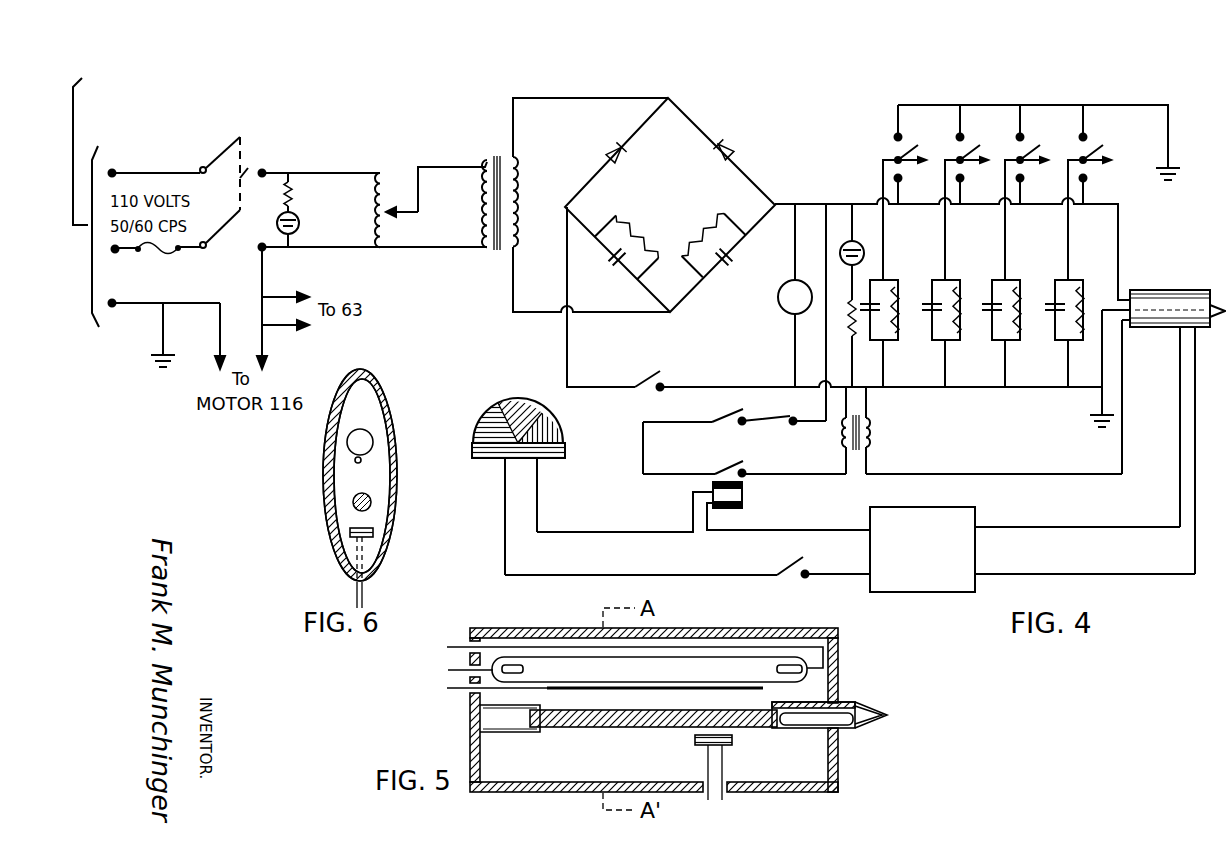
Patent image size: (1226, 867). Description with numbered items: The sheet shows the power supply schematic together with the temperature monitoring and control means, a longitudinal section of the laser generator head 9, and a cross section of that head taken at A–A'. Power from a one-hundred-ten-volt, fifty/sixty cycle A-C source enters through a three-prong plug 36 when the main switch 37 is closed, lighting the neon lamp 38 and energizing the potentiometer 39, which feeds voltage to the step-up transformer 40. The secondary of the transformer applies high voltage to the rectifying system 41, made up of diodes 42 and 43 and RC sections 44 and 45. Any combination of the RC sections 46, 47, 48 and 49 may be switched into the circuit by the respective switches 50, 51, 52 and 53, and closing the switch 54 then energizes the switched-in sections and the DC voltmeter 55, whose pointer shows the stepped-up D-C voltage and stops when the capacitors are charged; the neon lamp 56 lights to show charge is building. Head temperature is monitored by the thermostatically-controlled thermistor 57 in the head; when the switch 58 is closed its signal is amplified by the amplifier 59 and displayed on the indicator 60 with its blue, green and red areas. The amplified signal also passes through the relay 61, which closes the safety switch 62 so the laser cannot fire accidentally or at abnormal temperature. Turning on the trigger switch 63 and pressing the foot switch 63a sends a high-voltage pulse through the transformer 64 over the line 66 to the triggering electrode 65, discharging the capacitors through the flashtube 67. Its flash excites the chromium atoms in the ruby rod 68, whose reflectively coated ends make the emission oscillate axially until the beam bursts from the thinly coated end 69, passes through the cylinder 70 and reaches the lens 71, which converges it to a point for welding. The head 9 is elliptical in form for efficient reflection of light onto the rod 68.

In FIG. 4, the 3-prong plug 36 is at (78, 85).
In FIG. 4, the main switch 37 is at (250, 141).
In FIG. 4, the neon lamp 38 is at (300, 223).
In FIG. 4, the potentiometer 39 is at (393, 222).
In FIG. 4, the step-up transformer 40 is at (490, 153).
In FIG. 4, the rectifying system 41 is at (583, 87).
In FIG. 4, the diode 42 is at (623, 153).
In FIG. 4, the diode 43 is at (742, 151).
In FIG. 4, the RC section 44 is at (623, 270).
In FIG. 4, the RC section 45 is at (718, 270).
In FIG. 4, the RC section 46 is at (895, 280).
In FIG. 4, the RC section 47 is at (957, 280).
In FIG. 4, the RC section 48 is at (1017, 280).
In FIG. 4, the RC section 49 is at (1080, 280).
In FIG. 4, the switch 50 is at (914, 148).
In FIG. 4, the switch 51 is at (976, 148).
In FIG. 4, the switch 52 is at (1036, 148).
In FIG. 4, the switch 53 is at (1100, 148).
In FIG. 4, the switch 54 is at (637, 379).
In FIG. 4, the DC voltmeter 55 is at (785, 312).
In FIG. 4, the neon lamp 56 is at (861, 240).
In FIG. 6, the thermistor 57 is at (375, 534).
In FIG. 5, the thermistor 57 is at (735, 740).
In FIG. 4, the switch 58 is at (775, 573).
In FIG. 4, the amplifier 59 is at (902, 570).
In FIG. 4, the indicator 60 is at (566, 426).
In FIG. 4, the relay 61 is at (745, 490).
In FIG. 4, the switch 62 is at (715, 470).
In FIG. 4, the trigger switch 63 is at (719, 418).
In FIG. 4, the foot switch 63a is at (775, 412).
In FIG. 4, the transformer 64 is at (872, 433).
In FIG. 6, the triggering electrode 65 is at (362, 460).
In FIG. 5, the triggering electrode 65 is at (656, 688).
In FIG. 4, the line 66 is at (975, 471).
In FIG. 5, the line 66 is at (458, 693).
In FIG. 6, the flashtube 67 is at (373, 437).
In FIG. 5, the flashtube 67 is at (836, 652).
In FIG. 6, the ruby rod 68 is at (372, 502).
In FIG. 5, the ruby rod 68 is at (627, 731).
In FIG. 5, the thinly coated end 69 is at (839, 742).
In FIG. 5, the cylinder 70 is at (845, 704).
In FIG. 5, the lens 71 is at (869, 722).
In FIG. 4, the laser generator head 9 is at (1168, 290).
In FIG. 5, the laser generator head 9 is at (702, 628).